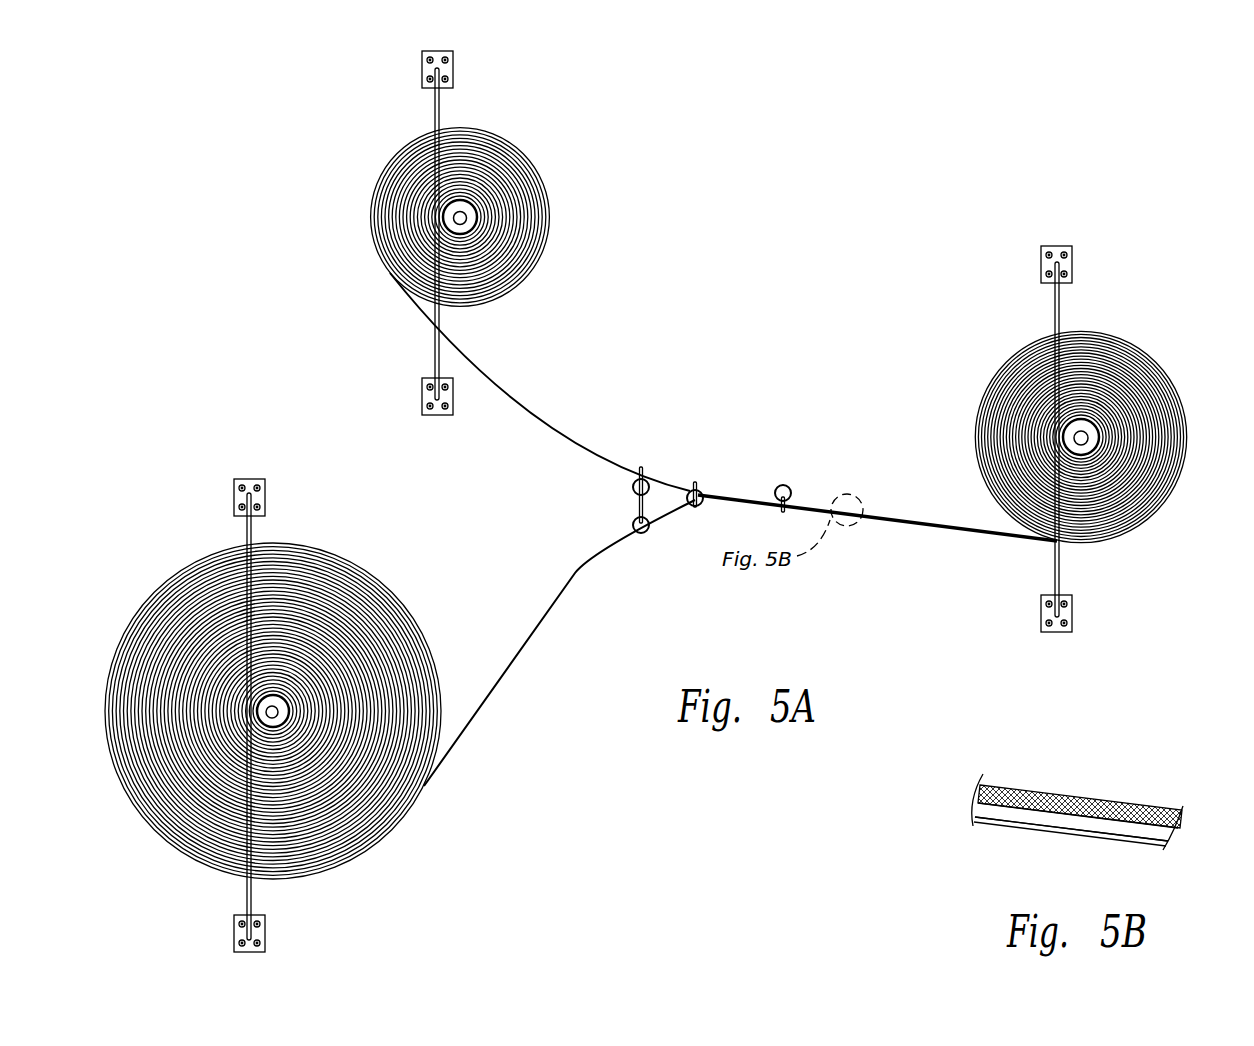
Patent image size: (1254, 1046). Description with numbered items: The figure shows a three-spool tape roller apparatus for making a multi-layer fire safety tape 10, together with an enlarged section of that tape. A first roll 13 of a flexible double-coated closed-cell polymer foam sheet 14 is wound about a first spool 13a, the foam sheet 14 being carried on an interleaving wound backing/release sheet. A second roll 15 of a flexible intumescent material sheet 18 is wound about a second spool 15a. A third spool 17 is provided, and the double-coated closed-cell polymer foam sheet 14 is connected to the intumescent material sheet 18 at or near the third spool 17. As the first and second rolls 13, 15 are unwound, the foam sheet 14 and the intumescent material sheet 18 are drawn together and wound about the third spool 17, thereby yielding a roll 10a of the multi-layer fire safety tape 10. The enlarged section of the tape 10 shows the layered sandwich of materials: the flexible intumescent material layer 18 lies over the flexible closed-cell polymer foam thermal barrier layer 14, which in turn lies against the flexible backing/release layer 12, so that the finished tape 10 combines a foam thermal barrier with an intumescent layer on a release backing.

In FIG. 5A, the multi-layer fire safety tape 10 is at (1070, 551).
In FIG. 5B, the multi-layer fire safety tape 10 is at (1071, 797).
In FIG. 5A, the roll of multi-layer fire safety tape 10a is at (1145, 333).
In FIG. 5B, the backing/release layer 12 is at (1085, 835).
In FIG. 5A, the first roll 13 is at (130, 579).
In FIG. 5A, the first spool 13a is at (279, 706).
In FIG. 5A, the closed-cell polymer foam thermal barrier layer 14 is at (530, 624).
In FIG. 5B, the closed-cell polymer foam thermal barrier layer 14 is at (1020, 815).
In FIG. 5A, the second roll 15 is at (527, 129).
In FIG. 5A, the second spool 15a is at (466, 221).
In FIG. 5A, the third spool 17 is at (1092, 438).
In FIG. 5A, the intumescent material layer 18 is at (518, 403).
In FIG. 5B, the intumescent material layer 18 is at (1092, 800).